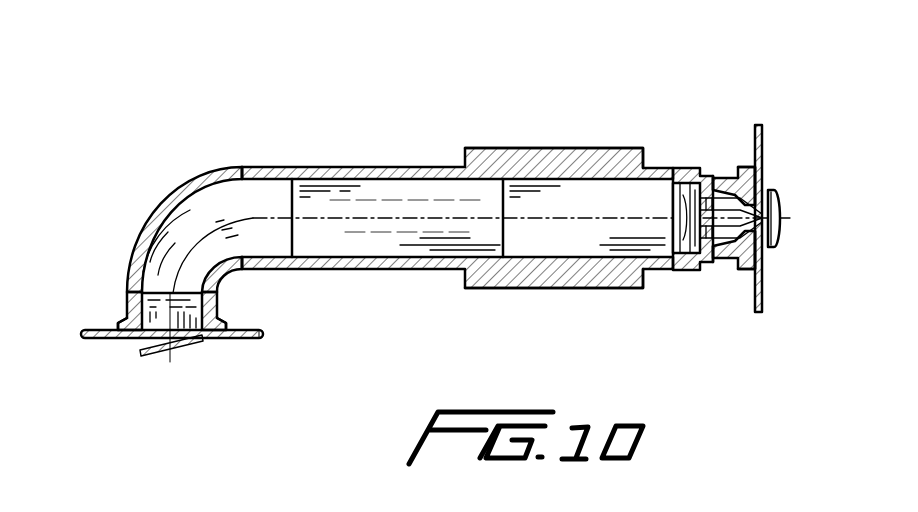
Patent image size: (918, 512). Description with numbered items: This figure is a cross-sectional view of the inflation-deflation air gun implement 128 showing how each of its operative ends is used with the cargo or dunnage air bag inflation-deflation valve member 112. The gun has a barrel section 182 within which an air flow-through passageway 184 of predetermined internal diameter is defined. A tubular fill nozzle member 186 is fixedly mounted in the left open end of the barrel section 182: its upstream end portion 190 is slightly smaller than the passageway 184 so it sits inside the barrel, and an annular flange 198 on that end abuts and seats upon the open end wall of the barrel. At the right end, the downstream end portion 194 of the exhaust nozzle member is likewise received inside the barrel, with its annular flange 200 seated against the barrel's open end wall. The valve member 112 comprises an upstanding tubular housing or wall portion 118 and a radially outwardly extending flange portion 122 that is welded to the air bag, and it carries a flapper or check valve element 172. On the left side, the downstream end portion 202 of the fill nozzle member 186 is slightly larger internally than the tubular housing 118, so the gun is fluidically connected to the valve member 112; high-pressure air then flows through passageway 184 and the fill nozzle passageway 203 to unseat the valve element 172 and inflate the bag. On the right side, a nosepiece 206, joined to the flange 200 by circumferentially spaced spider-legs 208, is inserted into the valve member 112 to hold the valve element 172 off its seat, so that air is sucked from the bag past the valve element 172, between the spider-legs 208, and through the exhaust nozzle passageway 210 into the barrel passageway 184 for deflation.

The inflation-deflation valve member 112 is at (766, 137).
The tubular housing or wall portion 118 is at (130, 263).
The radially outwardly extending flange portion 122 is at (248, 340).
The air gun implement 128 is at (530, 148).
The flapper valve or check valve element 172 is at (790, 245).
The barrel section 182 is at (418, 166).
The air flow-through passageway 184 is at (437, 240).
The fill nozzle member 186 is at (160, 208).
The upstream end portion of the fill nozzle member 190 is at (273, 244).
The downstream end portion of the exhaust nozzle member 194 is at (680, 270).
The annular flange 198 is at (240, 165).
The annular flange 200 is at (722, 168).
The downstream end portion of the fill nozzle member 202 is at (123, 305).
The passageway of the fill nozzle member 203 is at (220, 228).
The nosepiece 206 is at (768, 250).
The spider-legs 208 is at (735, 165).
The passageway of the exhaust nozzle member 210 is at (665, 167).